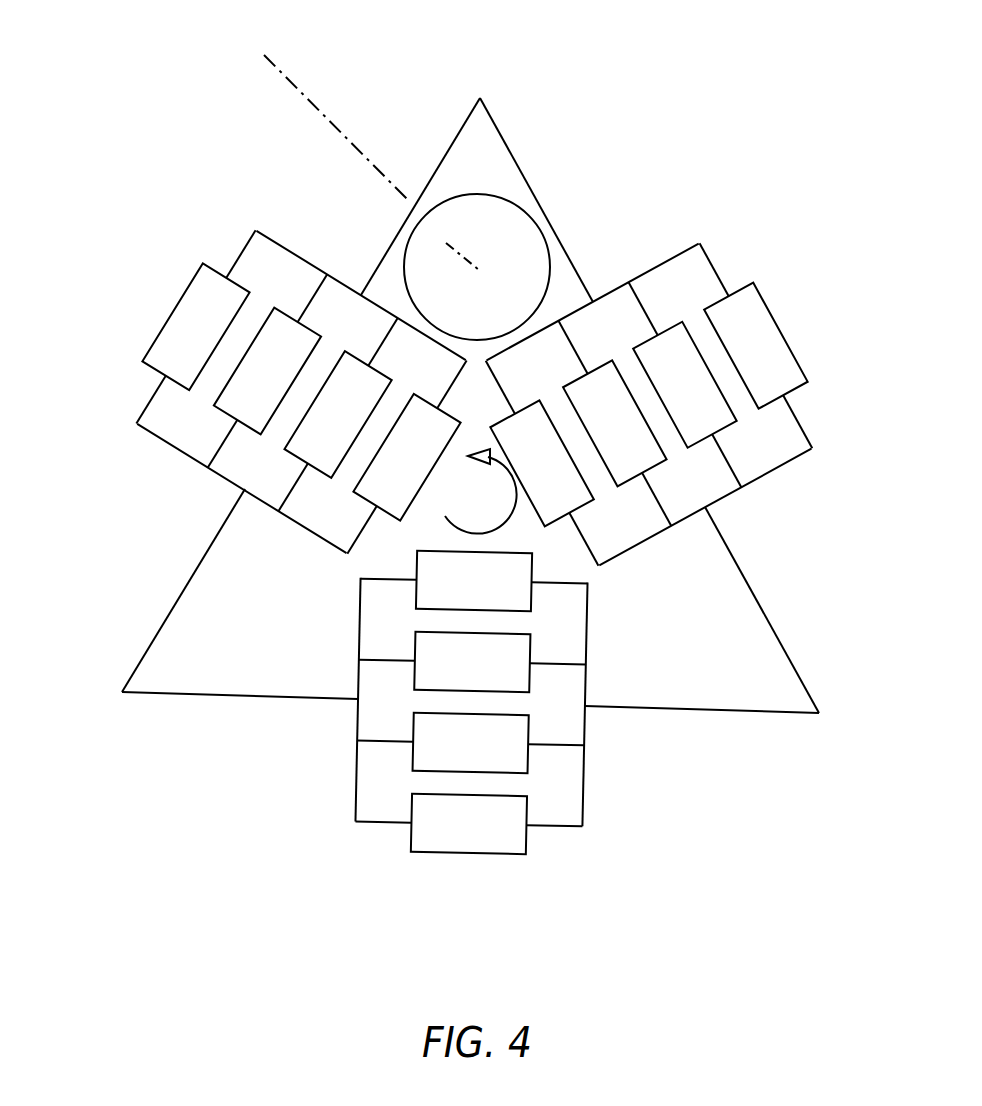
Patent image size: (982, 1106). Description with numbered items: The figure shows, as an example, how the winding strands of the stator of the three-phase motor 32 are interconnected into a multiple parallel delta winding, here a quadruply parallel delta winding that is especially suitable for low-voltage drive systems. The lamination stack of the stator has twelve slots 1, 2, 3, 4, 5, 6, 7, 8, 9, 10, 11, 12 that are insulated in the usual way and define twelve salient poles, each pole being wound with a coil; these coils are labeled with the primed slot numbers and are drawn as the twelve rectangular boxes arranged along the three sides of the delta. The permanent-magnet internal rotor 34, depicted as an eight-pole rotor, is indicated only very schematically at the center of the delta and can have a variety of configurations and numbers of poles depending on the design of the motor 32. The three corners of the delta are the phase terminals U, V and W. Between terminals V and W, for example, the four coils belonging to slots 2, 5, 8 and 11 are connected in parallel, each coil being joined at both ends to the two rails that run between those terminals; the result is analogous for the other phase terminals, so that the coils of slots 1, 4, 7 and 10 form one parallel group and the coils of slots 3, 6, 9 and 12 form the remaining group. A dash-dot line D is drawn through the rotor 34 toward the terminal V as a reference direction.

The slot 1 is at (474, 581).
The slot 2 is at (542, 463).
The slot 3 is at (407, 457).
The slot 4 is at (472, 662).
The slot 5 is at (615, 423).
The slot 6 is at (338, 415).
The slot 7 is at (471, 743).
The slot 8 is at (685, 385).
The slot 9 is at (267, 371).
The slot 10 is at (469, 824).
The slot 11 is at (756, 346).
The slot 12 is at (196, 327).
The three-phase motor 32 is at (288, 169).
The permanent-magnet internal rotor 34 is at (548, 247).
The reference axis D is at (286, 77).
The phase terminal U is at (57, 737).
The phase terminal V is at (485, 43).
The phase terminal W is at (876, 750).